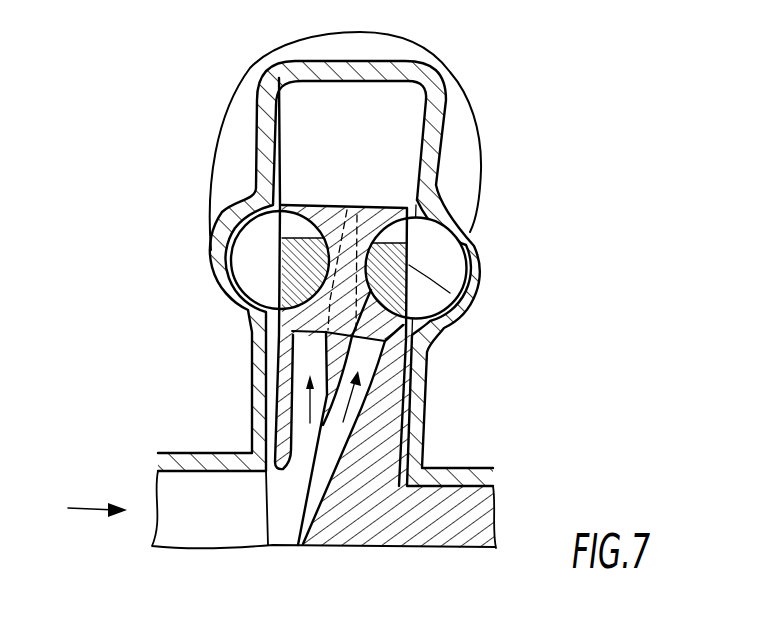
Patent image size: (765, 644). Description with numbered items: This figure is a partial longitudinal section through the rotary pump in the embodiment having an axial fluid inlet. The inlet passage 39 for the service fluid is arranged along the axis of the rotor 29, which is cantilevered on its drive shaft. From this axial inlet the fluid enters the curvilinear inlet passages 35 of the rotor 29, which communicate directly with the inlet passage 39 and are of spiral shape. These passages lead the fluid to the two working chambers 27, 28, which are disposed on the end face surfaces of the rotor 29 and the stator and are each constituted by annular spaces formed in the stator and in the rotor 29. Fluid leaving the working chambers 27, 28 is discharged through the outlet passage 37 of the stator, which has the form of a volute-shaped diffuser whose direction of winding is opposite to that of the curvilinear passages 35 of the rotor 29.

The working chamber 27 is at (247, 260).
The working chamber 28 is at (444, 260).
The rotor 29 is at (380, 436).
The curvilinear inlet passages 35 is at (310, 365).
The outlet passage of the stator 37 is at (403, 118).
The inlet passage 39 is at (182, 482).